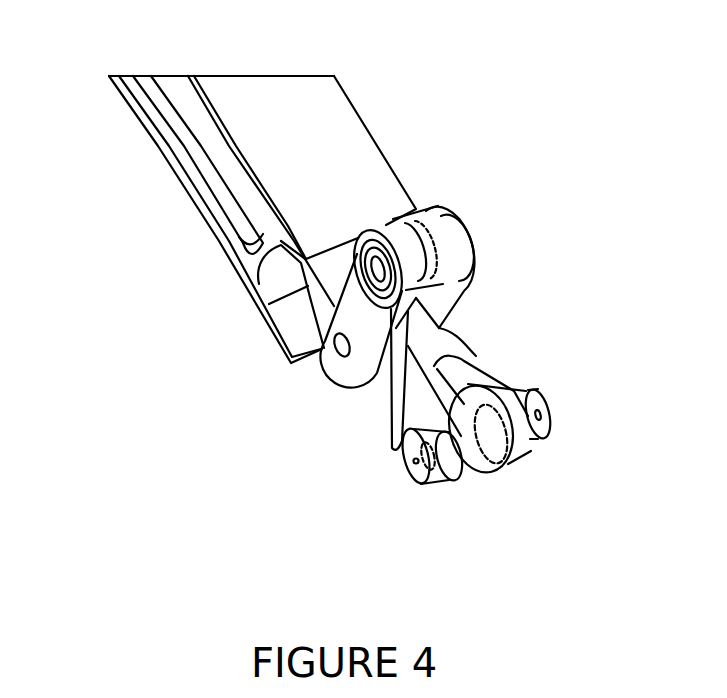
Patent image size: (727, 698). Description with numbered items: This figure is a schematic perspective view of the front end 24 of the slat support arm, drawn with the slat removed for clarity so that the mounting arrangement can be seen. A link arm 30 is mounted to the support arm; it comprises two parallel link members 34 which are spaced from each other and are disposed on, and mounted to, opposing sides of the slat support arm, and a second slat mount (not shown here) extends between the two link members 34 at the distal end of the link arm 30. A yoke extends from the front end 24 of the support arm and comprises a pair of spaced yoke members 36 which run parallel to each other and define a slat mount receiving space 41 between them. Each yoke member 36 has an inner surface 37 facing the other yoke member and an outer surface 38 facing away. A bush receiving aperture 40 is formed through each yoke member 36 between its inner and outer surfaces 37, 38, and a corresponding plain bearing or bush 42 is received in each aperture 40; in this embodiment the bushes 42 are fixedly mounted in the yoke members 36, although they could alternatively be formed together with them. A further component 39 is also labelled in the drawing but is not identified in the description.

The front end 24 is at (380, 389).
The link arm 30 is at (440, 292).
The parallel link members 34 is at (383, 222).
The yoke members 36 is at (492, 389).
The inner surface 37 is at (468, 372).
The outer surface 38 is at (417, 418).
The bracket 39 is at (535, 447).
The bush receiving aperture 40 is at (494, 468).
The slat mount receiving space 41 is at (452, 357).
The plain bearing or bush 42 is at (545, 412).